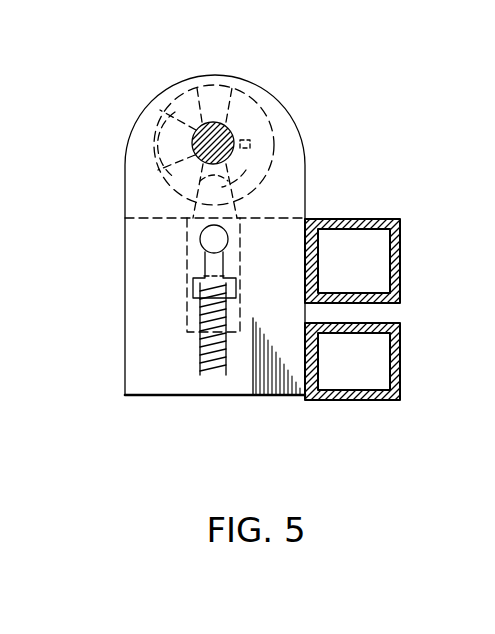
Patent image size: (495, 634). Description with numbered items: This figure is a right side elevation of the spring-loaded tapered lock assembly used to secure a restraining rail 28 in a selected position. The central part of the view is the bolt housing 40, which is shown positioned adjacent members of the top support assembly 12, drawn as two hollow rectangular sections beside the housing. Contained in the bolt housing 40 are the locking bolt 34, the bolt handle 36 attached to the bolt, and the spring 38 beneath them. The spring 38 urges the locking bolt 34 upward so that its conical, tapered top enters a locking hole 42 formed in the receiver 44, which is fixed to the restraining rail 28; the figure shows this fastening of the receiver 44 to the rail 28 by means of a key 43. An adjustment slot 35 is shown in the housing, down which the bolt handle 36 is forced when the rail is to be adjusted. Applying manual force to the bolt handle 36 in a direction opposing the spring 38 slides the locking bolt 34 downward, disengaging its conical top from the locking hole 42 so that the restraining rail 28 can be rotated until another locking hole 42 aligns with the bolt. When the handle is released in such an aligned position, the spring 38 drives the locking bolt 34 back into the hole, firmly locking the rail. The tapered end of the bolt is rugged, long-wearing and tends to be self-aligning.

The top support assembly 12 is at (404, 289).
The restraining rail 28 is at (211, 122).
The locking bolt 34 is at (190, 211).
The adjustment slot 35 is at (202, 267).
The bolt handle 36 is at (228, 238).
The spring 38 is at (222, 373).
The bolt housing 40 is at (143, 388).
The locking hole 42 is at (197, 168).
The key 43 is at (252, 138).
The receiver 44 is at (272, 163).